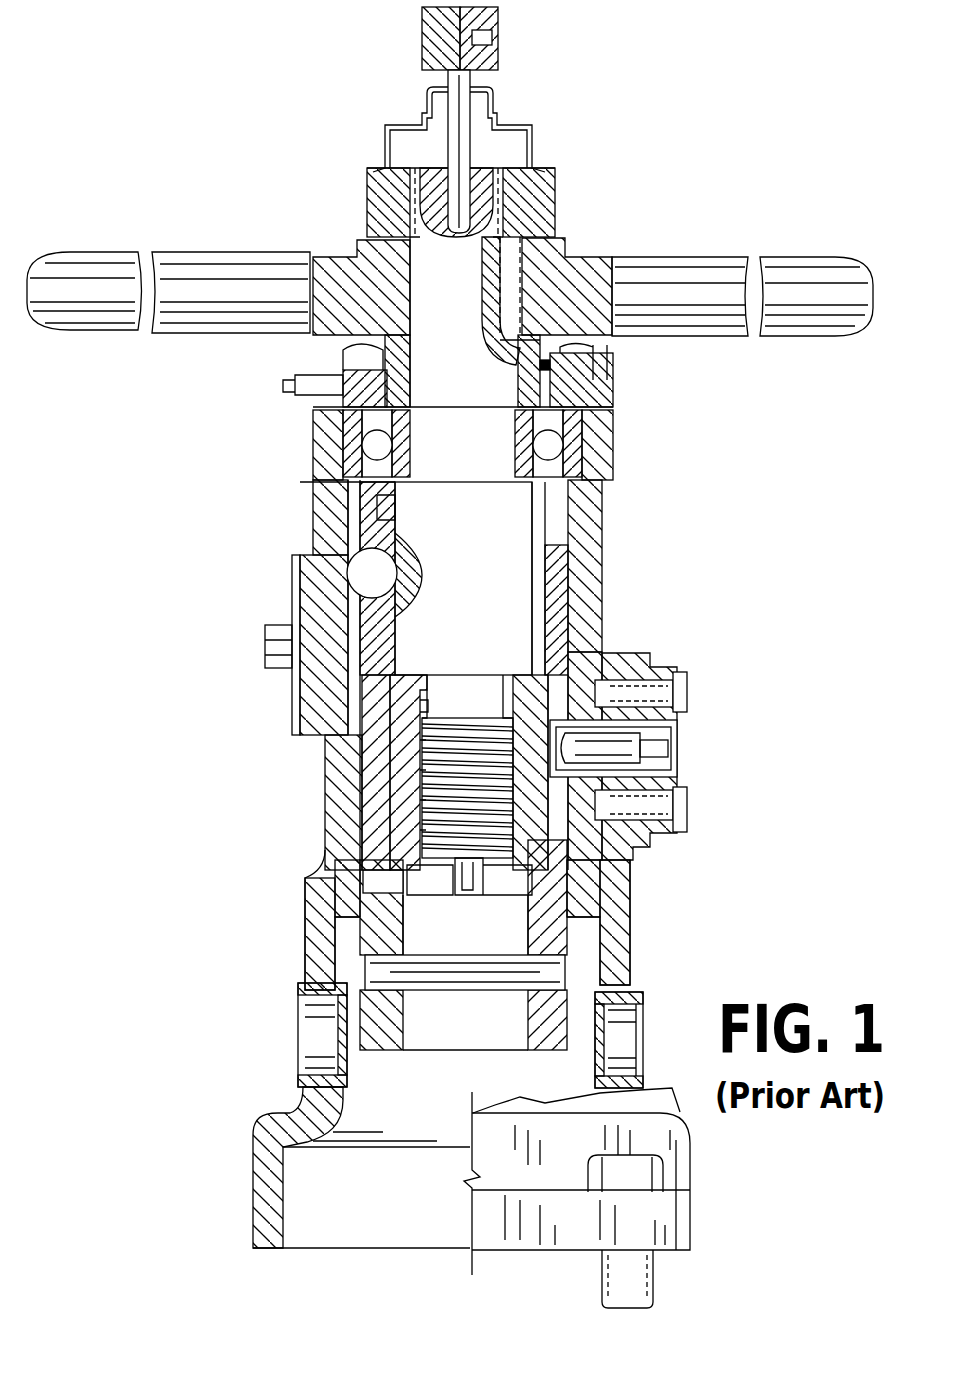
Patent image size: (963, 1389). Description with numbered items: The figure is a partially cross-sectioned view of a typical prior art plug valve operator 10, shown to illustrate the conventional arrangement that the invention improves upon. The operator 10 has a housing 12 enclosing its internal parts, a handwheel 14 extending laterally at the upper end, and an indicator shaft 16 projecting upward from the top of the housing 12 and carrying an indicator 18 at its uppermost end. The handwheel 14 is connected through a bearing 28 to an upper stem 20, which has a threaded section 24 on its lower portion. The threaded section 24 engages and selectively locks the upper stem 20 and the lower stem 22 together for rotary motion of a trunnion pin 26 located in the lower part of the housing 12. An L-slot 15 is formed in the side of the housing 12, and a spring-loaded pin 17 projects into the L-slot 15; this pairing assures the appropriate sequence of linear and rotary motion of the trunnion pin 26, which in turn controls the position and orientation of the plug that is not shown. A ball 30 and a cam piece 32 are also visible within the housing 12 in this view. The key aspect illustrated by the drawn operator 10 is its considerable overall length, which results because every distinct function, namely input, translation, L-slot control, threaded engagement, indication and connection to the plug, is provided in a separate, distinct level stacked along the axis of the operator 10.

The valve operator 10 is at (137, 908).
The housing 12 is at (600, 522).
The handwheel 14 is at (660, 258).
The L-slot 15 is at (625, 660).
The indicator shaft 16 is at (447, 132).
The spring-loaded pin 17 is at (676, 740).
The indicator 18 is at (422, 36).
The upper stem 20 is at (432, 510).
The lower stem 22 is at (392, 797).
The threaded section 24 is at (360, 810).
The trunnion pin 26 is at (340, 957).
The bearing 28 is at (312, 445).
The ball 30 is at (357, 580).
The cam piece 32 is at (513, 278).